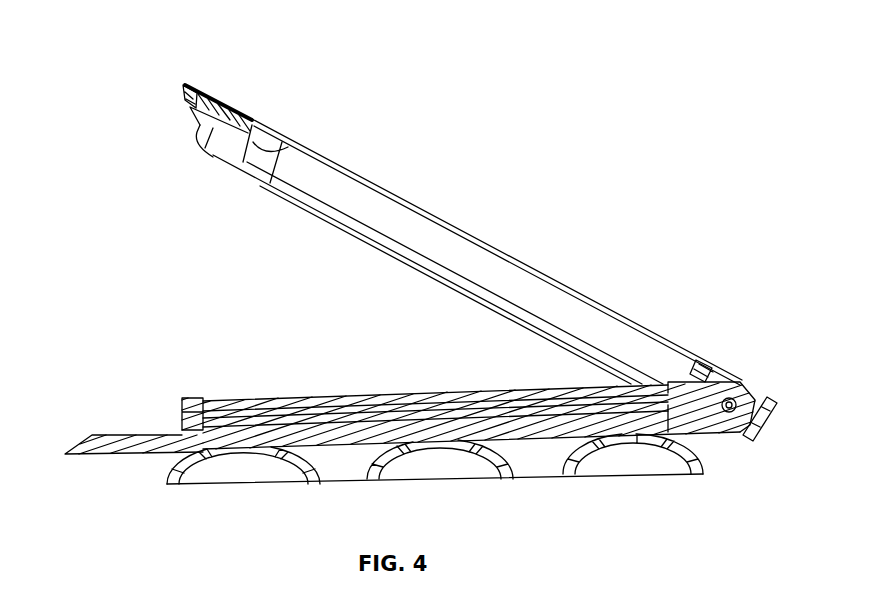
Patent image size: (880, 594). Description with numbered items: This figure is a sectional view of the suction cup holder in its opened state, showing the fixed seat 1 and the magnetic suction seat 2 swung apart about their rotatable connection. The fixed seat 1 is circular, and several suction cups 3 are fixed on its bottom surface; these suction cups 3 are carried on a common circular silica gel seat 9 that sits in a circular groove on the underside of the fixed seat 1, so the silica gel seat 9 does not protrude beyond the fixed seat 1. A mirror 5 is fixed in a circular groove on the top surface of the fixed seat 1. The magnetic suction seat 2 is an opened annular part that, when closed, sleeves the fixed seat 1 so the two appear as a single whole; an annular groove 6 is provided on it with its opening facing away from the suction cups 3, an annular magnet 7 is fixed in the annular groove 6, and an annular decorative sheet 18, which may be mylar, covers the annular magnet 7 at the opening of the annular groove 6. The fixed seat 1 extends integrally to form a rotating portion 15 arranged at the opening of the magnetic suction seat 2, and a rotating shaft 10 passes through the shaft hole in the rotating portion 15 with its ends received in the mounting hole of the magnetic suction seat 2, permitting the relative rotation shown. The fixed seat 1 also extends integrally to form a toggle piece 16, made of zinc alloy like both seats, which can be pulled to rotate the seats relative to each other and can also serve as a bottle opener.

The fixed seat 1 is at (182, 410).
The magnetic suction seat 2 is at (362, 200).
The suction cup 3 is at (183, 468).
The mirror 5 is at (303, 395).
The annular groove 6 is at (184, 86).
The annular magnet 7 is at (233, 104).
The silica gel seat 9 is at (387, 427).
The rotating shaft 10 is at (734, 399).
The rotating portion 15 is at (697, 377).
The toggle piece 16 is at (92, 435).
The decorative sheet 18 is at (207, 95).